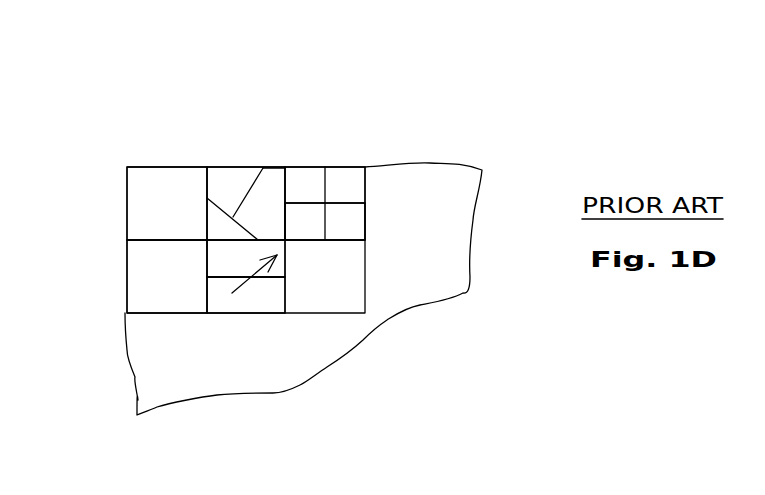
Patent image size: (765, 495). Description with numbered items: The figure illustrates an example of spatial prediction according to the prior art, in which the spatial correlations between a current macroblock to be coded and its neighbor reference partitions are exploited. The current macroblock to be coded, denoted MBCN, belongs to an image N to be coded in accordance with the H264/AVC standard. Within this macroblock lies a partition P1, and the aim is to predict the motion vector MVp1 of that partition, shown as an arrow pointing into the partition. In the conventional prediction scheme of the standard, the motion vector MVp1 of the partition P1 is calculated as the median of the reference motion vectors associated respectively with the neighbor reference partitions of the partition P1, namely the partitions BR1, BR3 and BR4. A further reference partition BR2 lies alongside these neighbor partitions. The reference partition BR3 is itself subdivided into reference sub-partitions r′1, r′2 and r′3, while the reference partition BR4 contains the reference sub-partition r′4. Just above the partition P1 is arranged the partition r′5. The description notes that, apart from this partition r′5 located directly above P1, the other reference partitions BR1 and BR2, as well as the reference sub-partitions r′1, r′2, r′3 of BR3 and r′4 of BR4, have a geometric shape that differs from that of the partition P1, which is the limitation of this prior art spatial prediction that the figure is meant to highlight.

The image to be coded N is at (402, 180).
The current macroblock to be coded MBCN is at (250, 313).
The neighbor reference partition BR1 is at (143, 300).
The reference partition BR2 is at (157, 167).
The neighbor reference partition BR3 is at (223, 167).
The neighbor reference partition BR4 is at (343, 167).
The reference sub-partition r′1 is at (217, 221).
The reference sub-partition r′2 is at (243, 177).
The reference sub-partition r′3 is at (272, 168).
The reference sub-partition r′4 is at (313, 222).
The partition arranged above P1 r′5 is at (215, 265).
The motion vector MVp1 is at (242, 287).
The partition of the current macroblock P1 is at (275, 307).